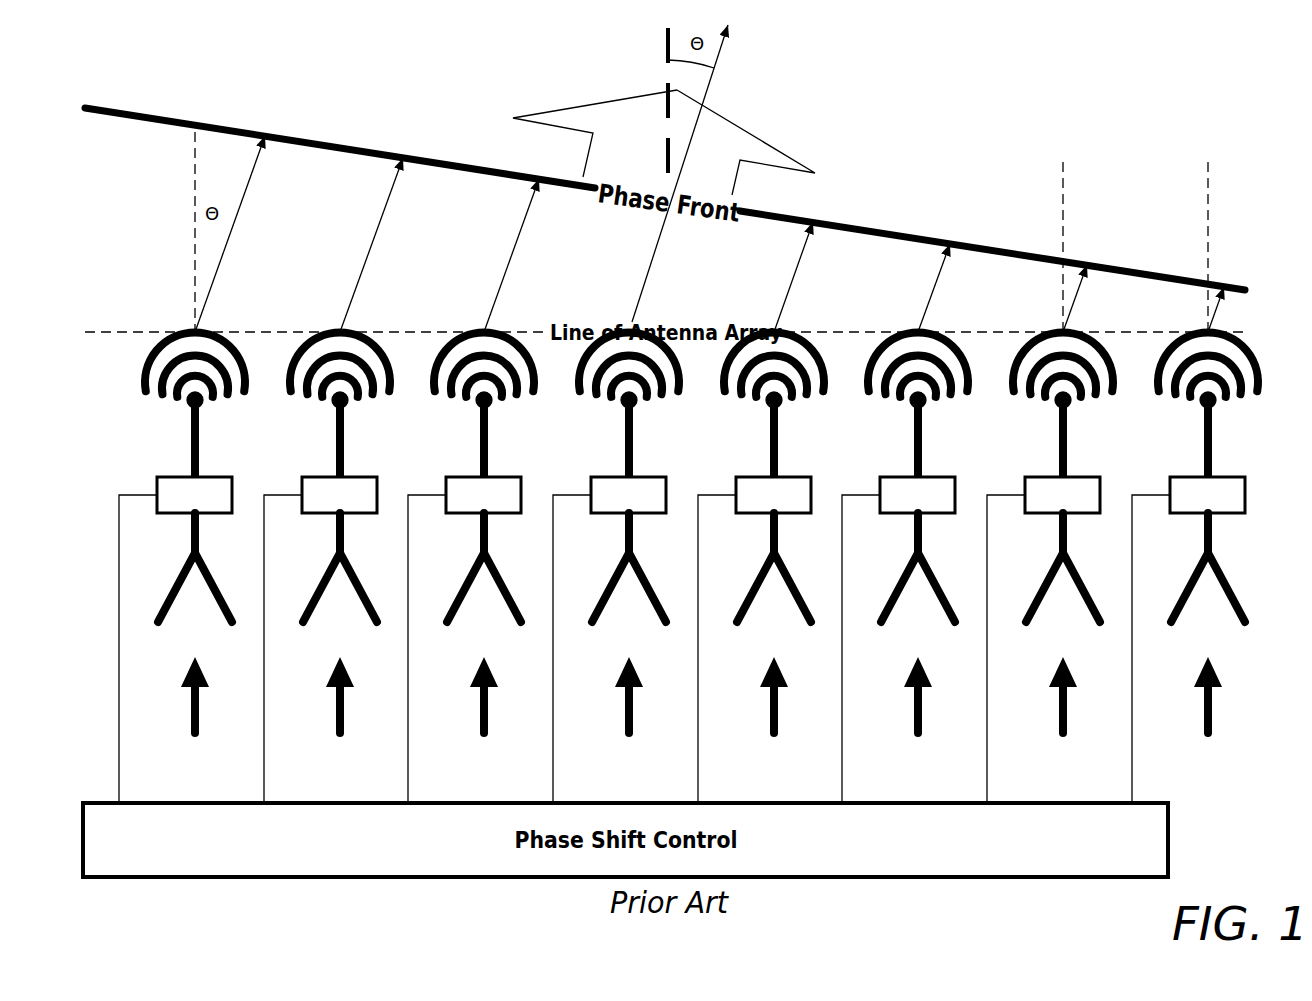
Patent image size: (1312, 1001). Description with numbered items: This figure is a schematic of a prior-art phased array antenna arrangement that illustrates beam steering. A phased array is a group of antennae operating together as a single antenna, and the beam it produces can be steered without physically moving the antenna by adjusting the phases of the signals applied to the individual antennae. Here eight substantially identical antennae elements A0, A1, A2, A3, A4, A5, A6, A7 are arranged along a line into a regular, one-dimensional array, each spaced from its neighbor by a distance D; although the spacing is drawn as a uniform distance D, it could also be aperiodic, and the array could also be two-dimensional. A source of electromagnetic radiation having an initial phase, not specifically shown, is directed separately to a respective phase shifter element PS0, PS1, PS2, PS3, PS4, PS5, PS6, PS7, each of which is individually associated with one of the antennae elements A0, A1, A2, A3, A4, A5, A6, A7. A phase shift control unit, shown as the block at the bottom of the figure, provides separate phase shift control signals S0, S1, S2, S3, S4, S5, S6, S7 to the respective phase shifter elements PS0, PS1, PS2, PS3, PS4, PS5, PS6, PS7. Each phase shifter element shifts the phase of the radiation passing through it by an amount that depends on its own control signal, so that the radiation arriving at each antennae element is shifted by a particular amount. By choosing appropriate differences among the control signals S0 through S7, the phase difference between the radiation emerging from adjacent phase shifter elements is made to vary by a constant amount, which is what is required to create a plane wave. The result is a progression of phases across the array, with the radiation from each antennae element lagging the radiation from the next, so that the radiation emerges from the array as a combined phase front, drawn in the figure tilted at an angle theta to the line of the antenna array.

The antennae element A0 is at (1191, 404).
The antennae element A1 is at (1046, 404).
The antennae element A2 is at (901, 404).
The antennae element A3 is at (757, 404).
The antennae element A4 is at (612, 404).
The antennae element A5 is at (467, 404).
The antennae element A6 is at (323, 404).
The antennae element A7 is at (178, 404).
The phase shifter element PS0 is at (1223, 588).
The phase shifter element PS1 is at (1071, 588).
The phase shifter element PS2 is at (933, 588).
The phase shifter element PS3 is at (789, 588).
The phase shifter element PS4 is at (644, 588).
The phase shifter element PS5 is at (499, 588).
The phase shifter element PS6 is at (355, 588).
The phase shifter element PS7 is at (210, 588).
The phase shift control signal S0 is at (1136, 649).
The phase shift control signal S1 is at (991, 649).
The phase shift control signal S2 is at (846, 649).
The phase shift control signal S3 is at (702, 649).
The phase shift control signal S4 is at (557, 649).
The phase shift control signal S5 is at (412, 649).
The phase shift control signal S6 is at (268, 649).
The phase shift control signal S7 is at (123, 649).
The spaced distance D is at (1063, 199).